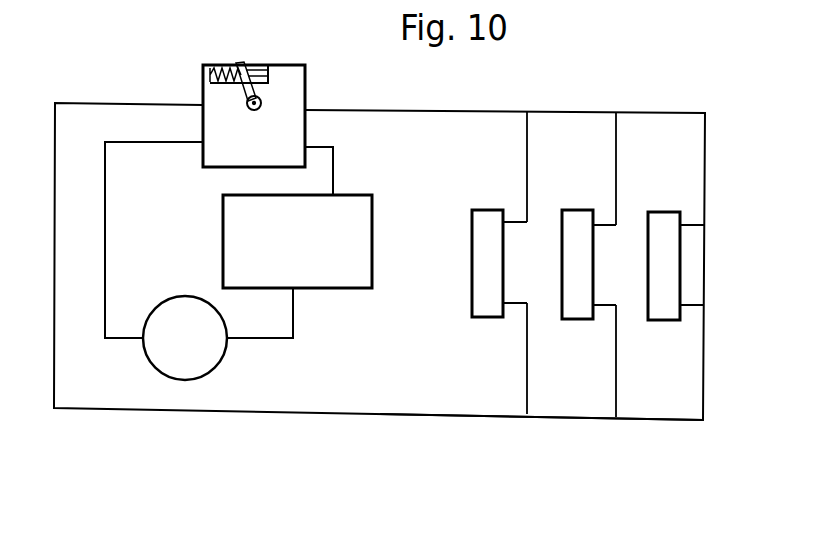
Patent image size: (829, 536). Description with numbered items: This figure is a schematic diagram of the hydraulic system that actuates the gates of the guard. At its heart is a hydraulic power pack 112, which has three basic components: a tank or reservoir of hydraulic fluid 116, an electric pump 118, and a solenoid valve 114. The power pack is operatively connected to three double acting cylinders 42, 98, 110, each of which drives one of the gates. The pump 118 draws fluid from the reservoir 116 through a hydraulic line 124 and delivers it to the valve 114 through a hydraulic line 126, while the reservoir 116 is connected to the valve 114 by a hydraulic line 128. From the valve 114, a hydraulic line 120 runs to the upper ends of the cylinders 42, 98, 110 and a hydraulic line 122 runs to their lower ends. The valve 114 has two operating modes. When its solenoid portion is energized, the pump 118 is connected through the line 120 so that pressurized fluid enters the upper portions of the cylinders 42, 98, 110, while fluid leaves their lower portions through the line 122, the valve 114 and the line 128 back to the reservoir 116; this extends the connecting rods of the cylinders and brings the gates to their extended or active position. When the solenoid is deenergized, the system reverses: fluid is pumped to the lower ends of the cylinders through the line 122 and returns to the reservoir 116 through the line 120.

The hydraulic power pack 112 is at (138, 102).
The solenoid valve 114 is at (292, 100).
The tank or reservoir of hydraulic fluid 116 is at (348, 200).
The electric pump 118 is at (216, 366).
The hydraulic line 120 is at (499, 112).
The hydraulic line 122 is at (428, 416).
The hydraulic line 124 is at (293, 322).
The hydraulic line 126 is at (105, 237).
The hydraulic line 128 is at (320, 147).
The double acting cylinder 42 is at (489, 218).
The double acting cylinder 98 is at (580, 218).
The double acting hydraulic cylinder 110 is at (667, 220).